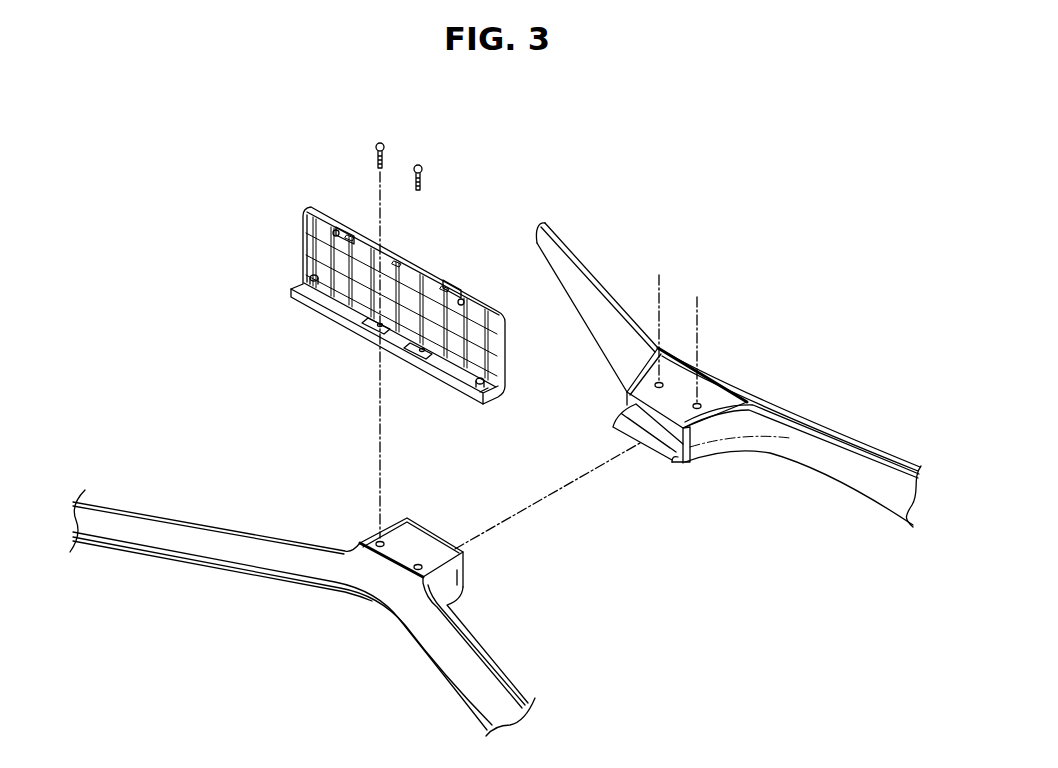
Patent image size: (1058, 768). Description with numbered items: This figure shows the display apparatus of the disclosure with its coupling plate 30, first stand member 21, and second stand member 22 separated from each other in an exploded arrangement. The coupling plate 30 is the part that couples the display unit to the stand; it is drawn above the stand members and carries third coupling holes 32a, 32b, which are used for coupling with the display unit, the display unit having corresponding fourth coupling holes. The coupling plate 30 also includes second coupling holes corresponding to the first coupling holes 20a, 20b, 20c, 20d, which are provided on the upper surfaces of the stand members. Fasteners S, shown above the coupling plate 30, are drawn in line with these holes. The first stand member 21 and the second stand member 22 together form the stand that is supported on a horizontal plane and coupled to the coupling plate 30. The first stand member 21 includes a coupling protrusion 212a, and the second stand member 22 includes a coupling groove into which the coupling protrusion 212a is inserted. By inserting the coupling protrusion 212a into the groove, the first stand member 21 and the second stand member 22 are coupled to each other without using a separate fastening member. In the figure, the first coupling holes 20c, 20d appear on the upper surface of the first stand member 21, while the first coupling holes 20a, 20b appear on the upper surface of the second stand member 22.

The coupling plate 30 is at (293, 207).
The third coupling hole 32a is at (415, 348).
The third coupling hole 32b is at (378, 320).
The screw S is at (432, 165).
The first stand member 21 is at (817, 409).
The second stand member 22 is at (358, 619).
The first coupling hole 20a is at (420, 565).
The first coupling hole 20b is at (378, 541).
The first coupling hole 20c is at (699, 403).
The first coupling hole 20d is at (656, 383).
The coupling protrusion 212a is at (659, 449).